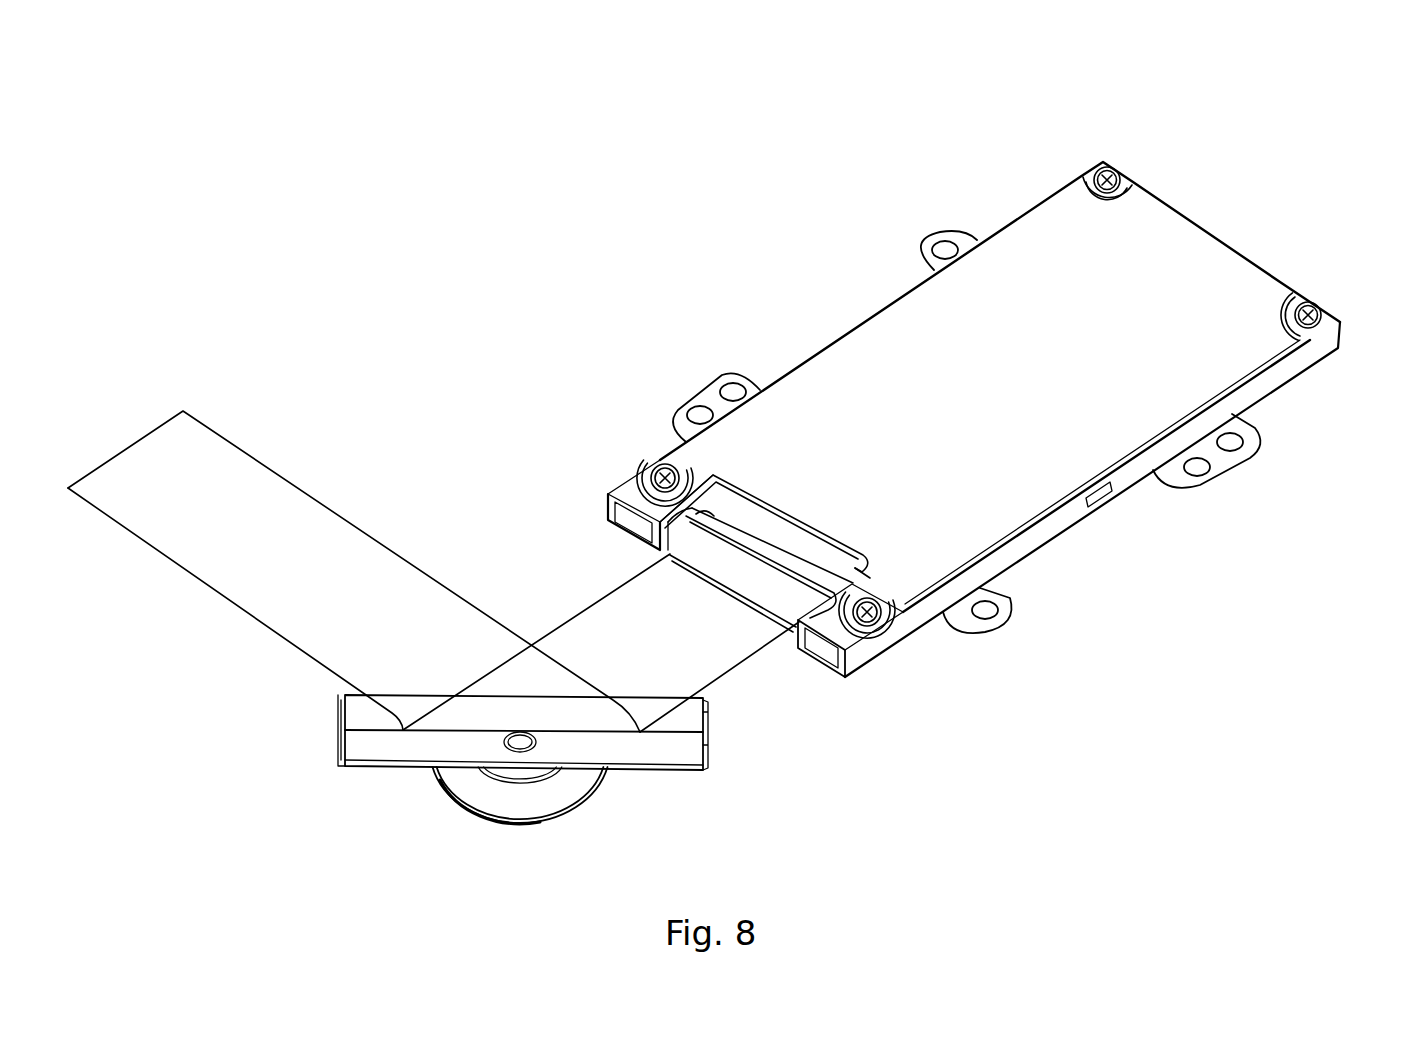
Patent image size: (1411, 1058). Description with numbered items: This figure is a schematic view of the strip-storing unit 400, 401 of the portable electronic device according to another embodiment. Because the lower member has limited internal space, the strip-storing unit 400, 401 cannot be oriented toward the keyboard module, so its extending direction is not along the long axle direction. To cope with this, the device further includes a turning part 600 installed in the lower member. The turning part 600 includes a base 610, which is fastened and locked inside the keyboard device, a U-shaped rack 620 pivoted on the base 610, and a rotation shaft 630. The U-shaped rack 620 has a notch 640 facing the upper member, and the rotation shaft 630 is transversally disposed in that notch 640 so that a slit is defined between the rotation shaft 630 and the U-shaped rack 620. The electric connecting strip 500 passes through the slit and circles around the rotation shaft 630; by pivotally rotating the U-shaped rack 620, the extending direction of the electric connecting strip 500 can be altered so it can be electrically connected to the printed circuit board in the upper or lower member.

The strip-storing unit 400 is at (1337, 163).
The strip-storing unit 401 is at (988, 400).
The electric connecting strip 500 is at (287, 481).
The turning part 600 is at (329, 766).
The base 610 is at (565, 790).
The U-shaped rack 620 is at (707, 757).
The rotation shaft 630 is at (365, 712).
The notch 640 is at (663, 760).